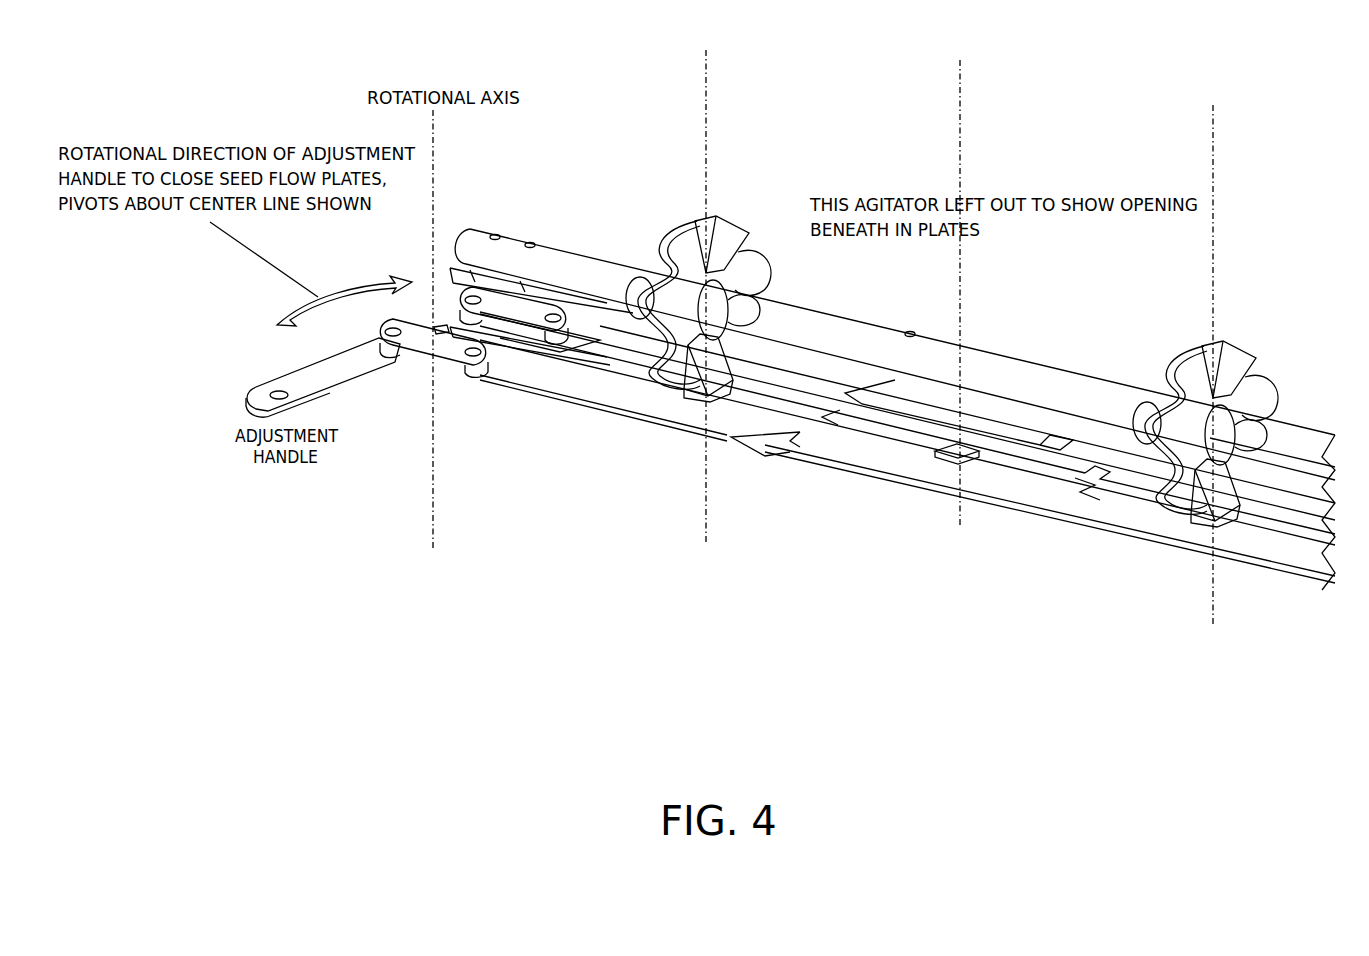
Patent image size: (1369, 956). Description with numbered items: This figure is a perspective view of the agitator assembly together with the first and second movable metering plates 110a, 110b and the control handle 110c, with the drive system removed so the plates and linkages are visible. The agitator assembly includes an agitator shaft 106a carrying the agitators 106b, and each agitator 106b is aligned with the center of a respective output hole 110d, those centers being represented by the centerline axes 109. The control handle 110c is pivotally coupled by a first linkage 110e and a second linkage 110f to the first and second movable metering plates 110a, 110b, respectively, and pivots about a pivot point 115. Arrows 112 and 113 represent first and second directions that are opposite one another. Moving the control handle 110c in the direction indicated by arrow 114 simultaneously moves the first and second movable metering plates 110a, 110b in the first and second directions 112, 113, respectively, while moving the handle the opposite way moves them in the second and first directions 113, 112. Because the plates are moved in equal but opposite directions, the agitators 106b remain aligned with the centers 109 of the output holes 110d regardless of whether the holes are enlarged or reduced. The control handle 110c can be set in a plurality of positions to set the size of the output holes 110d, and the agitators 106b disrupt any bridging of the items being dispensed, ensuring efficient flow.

The agitator shaft 106a is at (566, 258).
The agitator 106b is at (735, 228).
The centerline axis 109 is at (706, 98).
The first movable metering plate 110a is at (722, 412).
The second movable metering plate 110b is at (748, 380).
The control handle 110c is at (269, 387).
The output hole 110d is at (953, 456).
The first linkage 110e is at (413, 342).
The second linkage 110f is at (497, 297).
The first direction arrow 112 is at (1040, 437).
The second direction arrow 113 is at (762, 440).
The control handle movement direction arrow 114 is at (350, 278).
The pivot point 115 is at (443, 328).